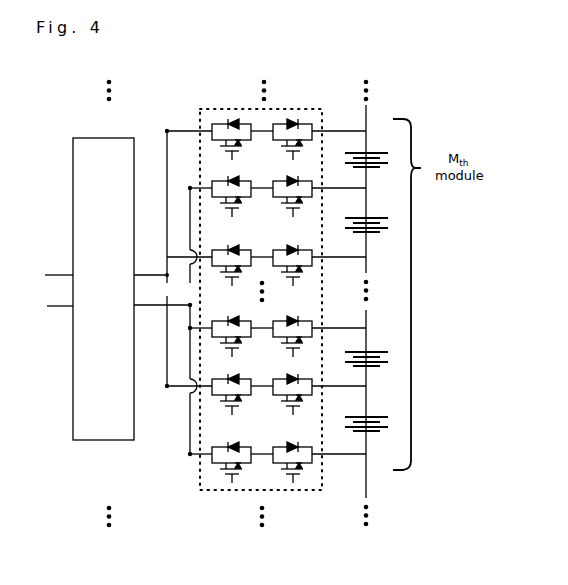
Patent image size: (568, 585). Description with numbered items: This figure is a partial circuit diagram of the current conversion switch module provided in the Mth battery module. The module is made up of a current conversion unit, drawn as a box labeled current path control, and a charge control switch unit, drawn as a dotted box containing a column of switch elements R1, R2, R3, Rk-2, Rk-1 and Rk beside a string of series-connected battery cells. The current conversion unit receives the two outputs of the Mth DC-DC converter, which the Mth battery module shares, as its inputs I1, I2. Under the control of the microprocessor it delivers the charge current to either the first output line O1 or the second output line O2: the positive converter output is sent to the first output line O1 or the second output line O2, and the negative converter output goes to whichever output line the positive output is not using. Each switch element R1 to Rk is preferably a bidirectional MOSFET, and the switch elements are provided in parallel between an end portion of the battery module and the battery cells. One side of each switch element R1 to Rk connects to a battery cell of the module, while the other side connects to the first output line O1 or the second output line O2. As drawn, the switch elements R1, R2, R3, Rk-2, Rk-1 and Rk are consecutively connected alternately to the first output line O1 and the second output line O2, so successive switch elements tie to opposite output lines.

The input I1 is at (54, 274).
The input I2 is at (52, 308).
The first output line O1 is at (157, 273).
The second output line O2 is at (152, 308).
The switch element R1 is at (266, 143).
The switch element R2 is at (278, 200).
The switch element R3 is at (266, 265).
The switch element Rk-2 is at (278, 340).
The switch element Rk-1 is at (266, 401).
The switch element Rk is at (203, 506).